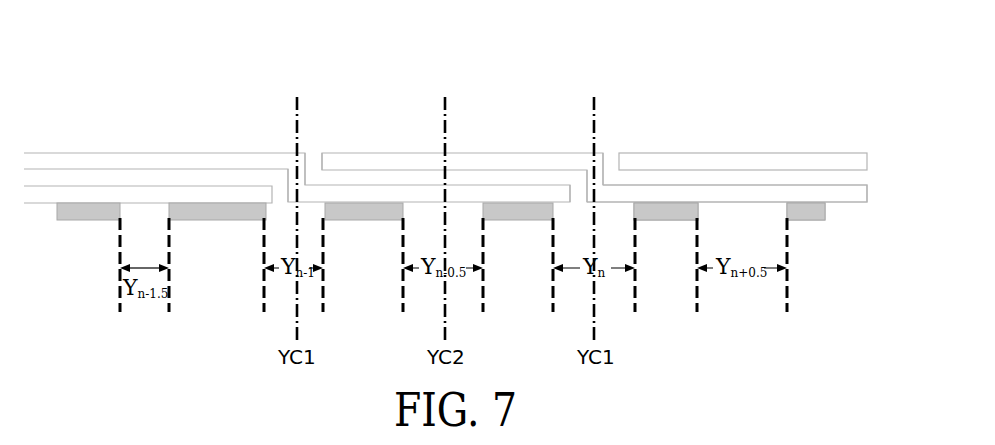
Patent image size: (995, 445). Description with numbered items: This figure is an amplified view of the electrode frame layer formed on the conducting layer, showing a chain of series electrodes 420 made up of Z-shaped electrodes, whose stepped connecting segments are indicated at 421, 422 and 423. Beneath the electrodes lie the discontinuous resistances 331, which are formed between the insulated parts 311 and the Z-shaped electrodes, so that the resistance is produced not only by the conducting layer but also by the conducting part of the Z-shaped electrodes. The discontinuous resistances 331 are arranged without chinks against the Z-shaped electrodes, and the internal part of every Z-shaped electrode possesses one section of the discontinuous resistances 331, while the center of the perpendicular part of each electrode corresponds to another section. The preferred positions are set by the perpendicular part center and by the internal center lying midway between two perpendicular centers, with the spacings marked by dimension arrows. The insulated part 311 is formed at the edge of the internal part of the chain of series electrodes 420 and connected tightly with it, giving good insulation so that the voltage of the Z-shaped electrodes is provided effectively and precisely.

The chain of series electrodes 420 is at (142, 153).
The first connecting portion 421 is at (313, 150).
The second connecting portion 422 is at (683, 183).
The third connecting portion 423 is at (578, 190).
The insulated part 311 is at (818, 220).
The discontinuous resistance 331 is at (727, 213).